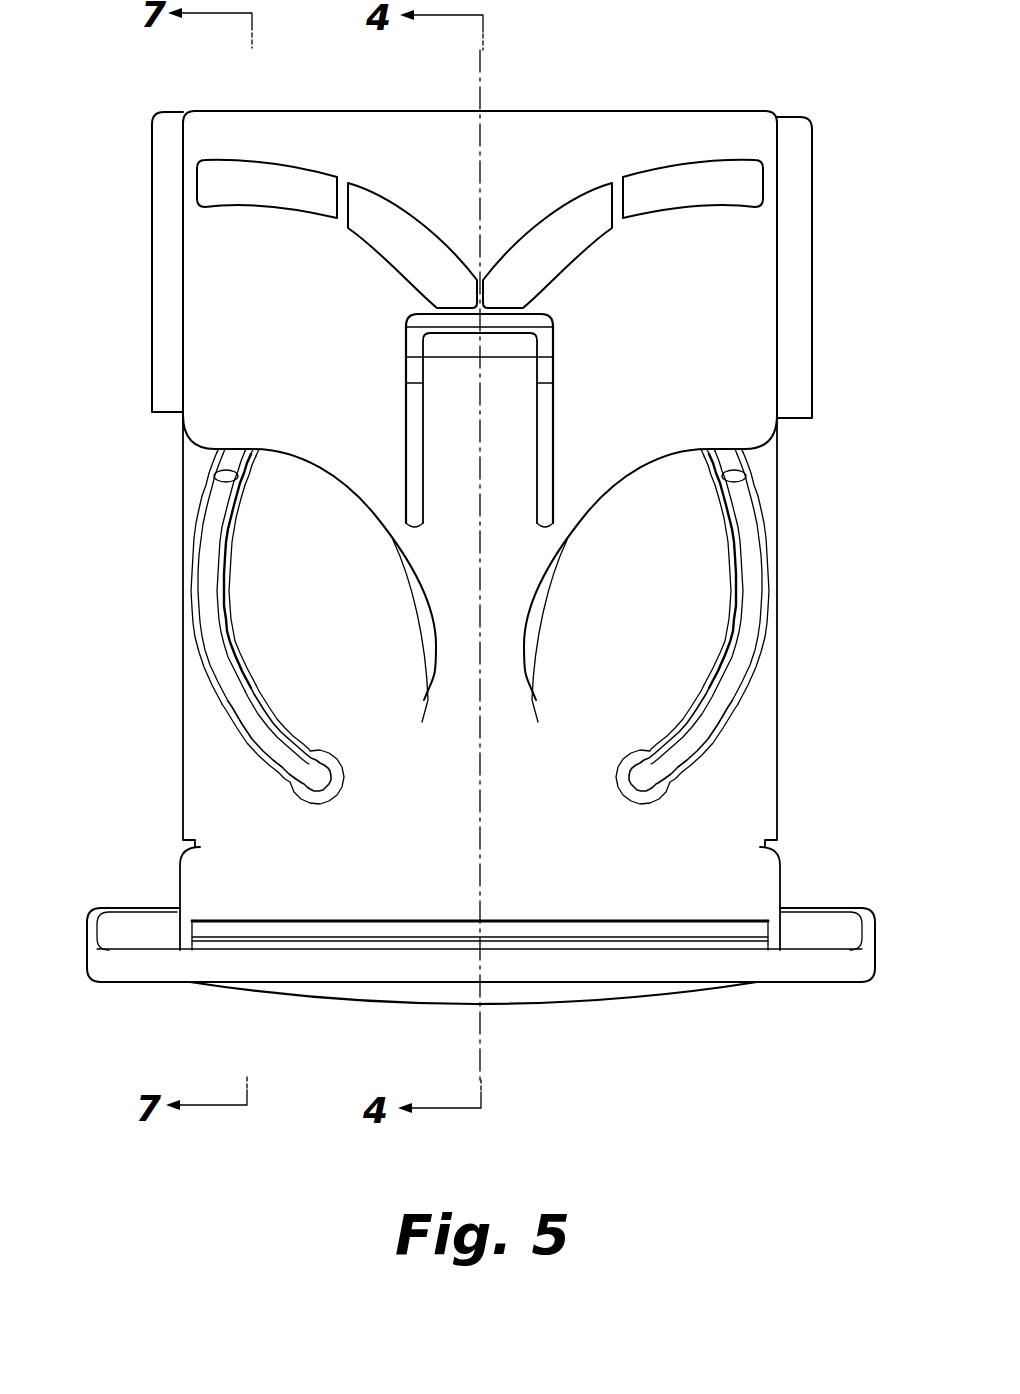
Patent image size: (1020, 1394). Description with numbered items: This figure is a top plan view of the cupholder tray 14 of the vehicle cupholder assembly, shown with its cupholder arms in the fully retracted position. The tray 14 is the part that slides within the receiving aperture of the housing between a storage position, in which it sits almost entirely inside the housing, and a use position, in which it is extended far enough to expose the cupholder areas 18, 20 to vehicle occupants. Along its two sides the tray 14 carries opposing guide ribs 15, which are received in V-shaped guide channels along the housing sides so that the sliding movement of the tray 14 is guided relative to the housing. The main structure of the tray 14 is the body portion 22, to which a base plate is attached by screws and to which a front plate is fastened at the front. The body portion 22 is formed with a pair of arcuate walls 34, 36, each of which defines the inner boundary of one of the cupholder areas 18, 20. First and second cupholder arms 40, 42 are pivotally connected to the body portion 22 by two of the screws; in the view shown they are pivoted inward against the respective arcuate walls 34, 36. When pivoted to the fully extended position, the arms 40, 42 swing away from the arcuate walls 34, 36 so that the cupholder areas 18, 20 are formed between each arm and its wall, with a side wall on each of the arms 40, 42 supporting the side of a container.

The tray 14 is at (709, 1013).
The guide ribs 15 is at (152, 342).
The cupholder area 18 is at (291, 612).
The cupholder area 20 is at (653, 617).
The body portion 22 is at (753, 388).
The arcuate wall 34 is at (417, 707).
The arcuate wall 36 is at (543, 708).
The first cupholder arm 40 is at (193, 525).
The second cupholder arm 42 is at (770, 527).